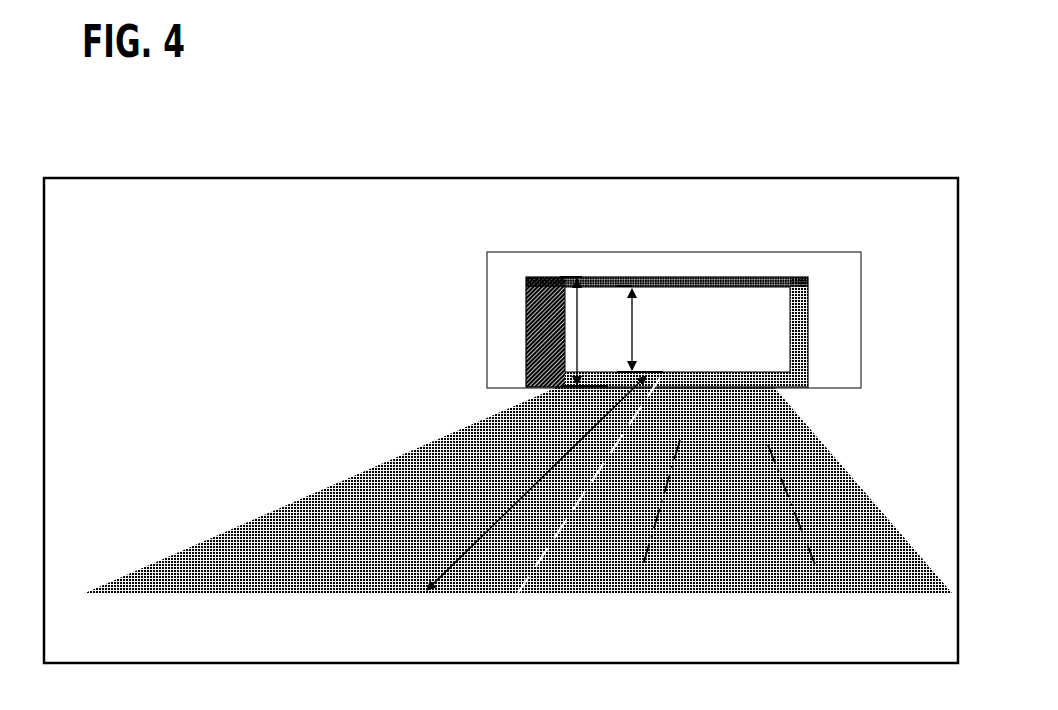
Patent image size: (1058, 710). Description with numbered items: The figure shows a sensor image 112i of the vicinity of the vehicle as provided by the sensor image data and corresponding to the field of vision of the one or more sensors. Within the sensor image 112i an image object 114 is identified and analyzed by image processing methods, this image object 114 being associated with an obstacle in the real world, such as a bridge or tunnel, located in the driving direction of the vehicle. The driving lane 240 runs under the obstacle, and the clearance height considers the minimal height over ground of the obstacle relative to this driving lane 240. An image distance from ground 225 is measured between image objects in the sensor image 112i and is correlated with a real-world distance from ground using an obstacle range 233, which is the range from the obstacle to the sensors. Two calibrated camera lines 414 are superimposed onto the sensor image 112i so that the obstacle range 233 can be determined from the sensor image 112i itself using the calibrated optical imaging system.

The sensor image 112i is at (522, 176).
The image object 114 is at (493, 282).
The driving lane 240 is at (755, 438).
The image distance from ground 225 is at (577, 354).
The obstacle range 233 is at (517, 492).
The calibrated camera lines 414 is at (659, 512).